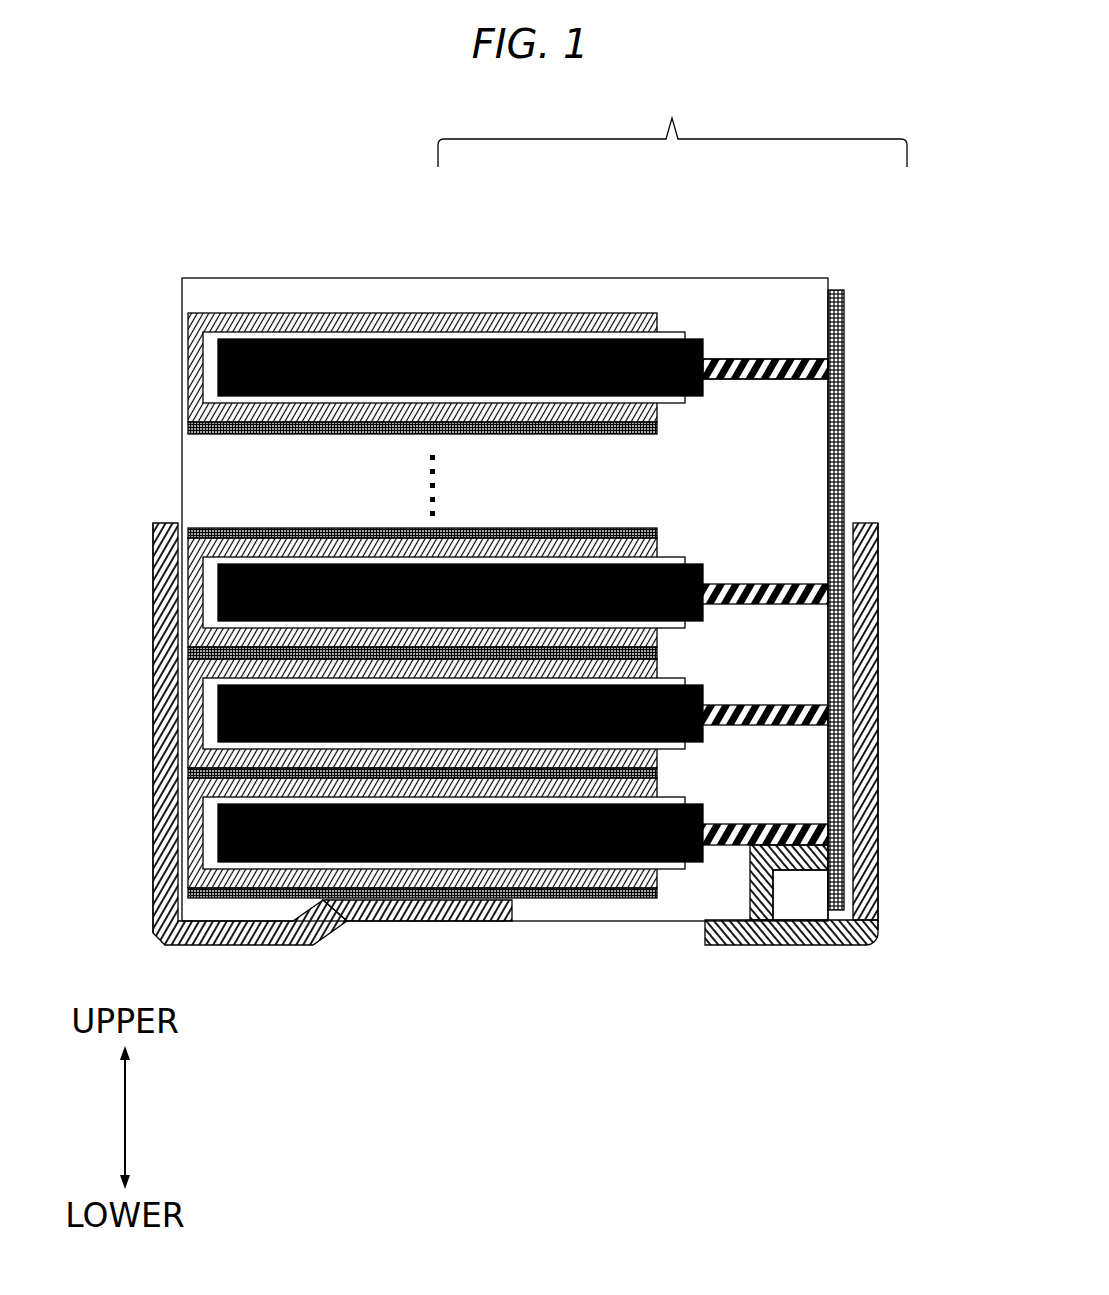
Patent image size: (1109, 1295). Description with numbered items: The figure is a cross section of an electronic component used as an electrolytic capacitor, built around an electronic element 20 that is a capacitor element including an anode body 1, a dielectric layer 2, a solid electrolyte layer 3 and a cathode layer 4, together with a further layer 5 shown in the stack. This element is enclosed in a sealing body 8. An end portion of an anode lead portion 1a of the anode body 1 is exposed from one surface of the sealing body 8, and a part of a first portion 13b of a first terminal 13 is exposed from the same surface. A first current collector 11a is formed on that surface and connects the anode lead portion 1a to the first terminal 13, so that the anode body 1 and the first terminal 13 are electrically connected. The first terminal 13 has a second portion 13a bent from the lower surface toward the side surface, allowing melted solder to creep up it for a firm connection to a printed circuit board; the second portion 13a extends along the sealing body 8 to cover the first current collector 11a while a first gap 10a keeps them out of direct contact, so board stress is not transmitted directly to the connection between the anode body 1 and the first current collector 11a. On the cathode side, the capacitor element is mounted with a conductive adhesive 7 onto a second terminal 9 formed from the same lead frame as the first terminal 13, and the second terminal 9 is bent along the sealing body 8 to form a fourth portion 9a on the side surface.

The anode body 1 is at (657, 316).
The anode lead portion 1a is at (770, 360).
The dielectric layer 2 is at (548, 340).
The solid electrolyte layer 3 is at (481, 332).
The cathode layer 4 is at (382, 318).
The intermediate layer 5 is at (253, 425).
The conductive adhesive 7 is at (598, 921).
The sealing body 8 is at (262, 293).
The second terminal 9 is at (190, 946).
The fourth portion 9a is at (172, 690).
The first gap 10a is at (853, 522).
The first current collector 11a is at (842, 423).
The first terminal 13 is at (778, 945).
The second portion 13a is at (878, 763).
The first portion 13b is at (795, 872).
The electronic element 20 is at (672, 126).